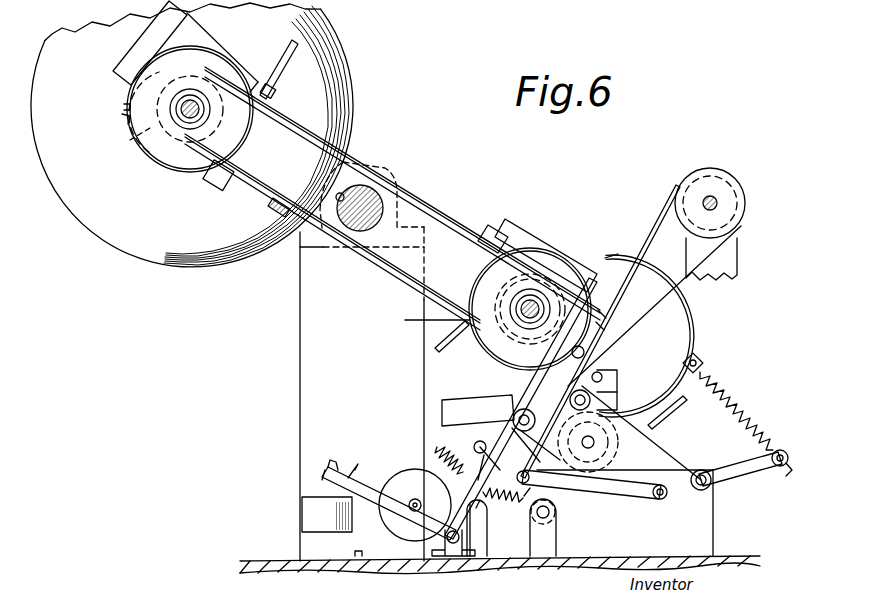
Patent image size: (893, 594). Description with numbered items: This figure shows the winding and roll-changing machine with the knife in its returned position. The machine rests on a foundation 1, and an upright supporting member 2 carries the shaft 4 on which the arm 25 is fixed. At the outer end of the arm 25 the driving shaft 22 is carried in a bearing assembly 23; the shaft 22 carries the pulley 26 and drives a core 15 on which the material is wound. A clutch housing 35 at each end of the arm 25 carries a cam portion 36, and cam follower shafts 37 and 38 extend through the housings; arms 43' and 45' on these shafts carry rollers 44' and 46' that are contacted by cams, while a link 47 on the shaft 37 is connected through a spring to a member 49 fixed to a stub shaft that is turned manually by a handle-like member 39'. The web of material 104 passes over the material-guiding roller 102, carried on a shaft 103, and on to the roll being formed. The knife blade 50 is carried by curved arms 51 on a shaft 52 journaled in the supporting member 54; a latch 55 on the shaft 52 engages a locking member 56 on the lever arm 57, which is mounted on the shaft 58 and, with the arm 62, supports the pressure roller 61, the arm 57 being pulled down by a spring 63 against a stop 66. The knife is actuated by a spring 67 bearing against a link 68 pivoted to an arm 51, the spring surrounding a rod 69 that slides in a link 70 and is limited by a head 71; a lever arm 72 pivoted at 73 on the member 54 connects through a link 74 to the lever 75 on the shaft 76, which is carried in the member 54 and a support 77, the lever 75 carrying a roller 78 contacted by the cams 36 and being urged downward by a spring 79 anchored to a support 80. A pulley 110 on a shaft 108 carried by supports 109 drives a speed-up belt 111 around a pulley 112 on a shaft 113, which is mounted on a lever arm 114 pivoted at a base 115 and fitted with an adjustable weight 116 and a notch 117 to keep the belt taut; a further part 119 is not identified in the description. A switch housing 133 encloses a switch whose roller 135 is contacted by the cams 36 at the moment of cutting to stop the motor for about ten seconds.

The foundation 1 is at (748, 560).
The upright supporting member 2 is at (300, 320).
The shaft 4 is at (372, 194).
The core 15 is at (148, 133).
The driving shaft 22 is at (204, 102).
The bearing assembly 23 is at (192, 104).
The arm 25 is at (442, 225).
The pulley 26 is at (160, 160).
The clutch housing 35 is at (182, 40).
The cam portion 36 is at (142, 47).
The cam follower shaft 37 is at (246, 192).
The cam follower shaft 38 is at (345, 168).
The handle-like member 39' is at (363, 190).
The arm 43' is at (96, 112).
The roller 44' is at (96, 91).
The arm 45' is at (621, 303).
The roller 46' is at (615, 318).
The link 47 is at (212, 186).
The member 49 is at (274, 92).
The knife blade 50 is at (612, 256).
The curved arm 51 is at (696, 311).
The shaft 52 is at (592, 394).
The supporting member 54 is at (708, 533).
The latch 55 is at (546, 449).
The locking member 56 is at (531, 448).
The lever arm 57 is at (462, 405).
The shaft 58 is at (514, 414).
The pressure roller 61 is at (590, 345).
The arm 62 is at (540, 391).
The spring 63 is at (436, 450).
The stop 66 is at (479, 447).
The spring 67 is at (740, 378).
The link 68 is at (702, 362).
The rod 69 is at (748, 398).
The link 70 is at (783, 450).
The head 71 is at (788, 470).
The lever arm 72 is at (745, 478).
The pivot 73 is at (703, 472).
The link 74 is at (624, 498).
The lever 75 is at (522, 500).
The shaft 76 is at (550, 512).
The support 77 is at (557, 545).
The roller 78 is at (473, 467).
The spring 79 is at (487, 528).
The support 80 is at (492, 548).
The material-guiding roller 102 is at (600, 460).
The shaft 103 is at (596, 444).
The material 104 is at (672, 412).
The shaft 108 is at (717, 203).
The support 109 is at (738, 257).
The pulley 110 is at (741, 195).
The speed-up belt 111 is at (668, 200).
The pulley 112 is at (405, 482).
The shaft 113 is at (410, 510).
The lever arm 114 is at (378, 500).
The base 115 is at (452, 545).
The weight 116 is at (312, 512).
The notch 117 is at (336, 468).
The stop 119 is at (355, 555).
The switch housing 133 is at (600, 372).
The roller 135 is at (600, 362).